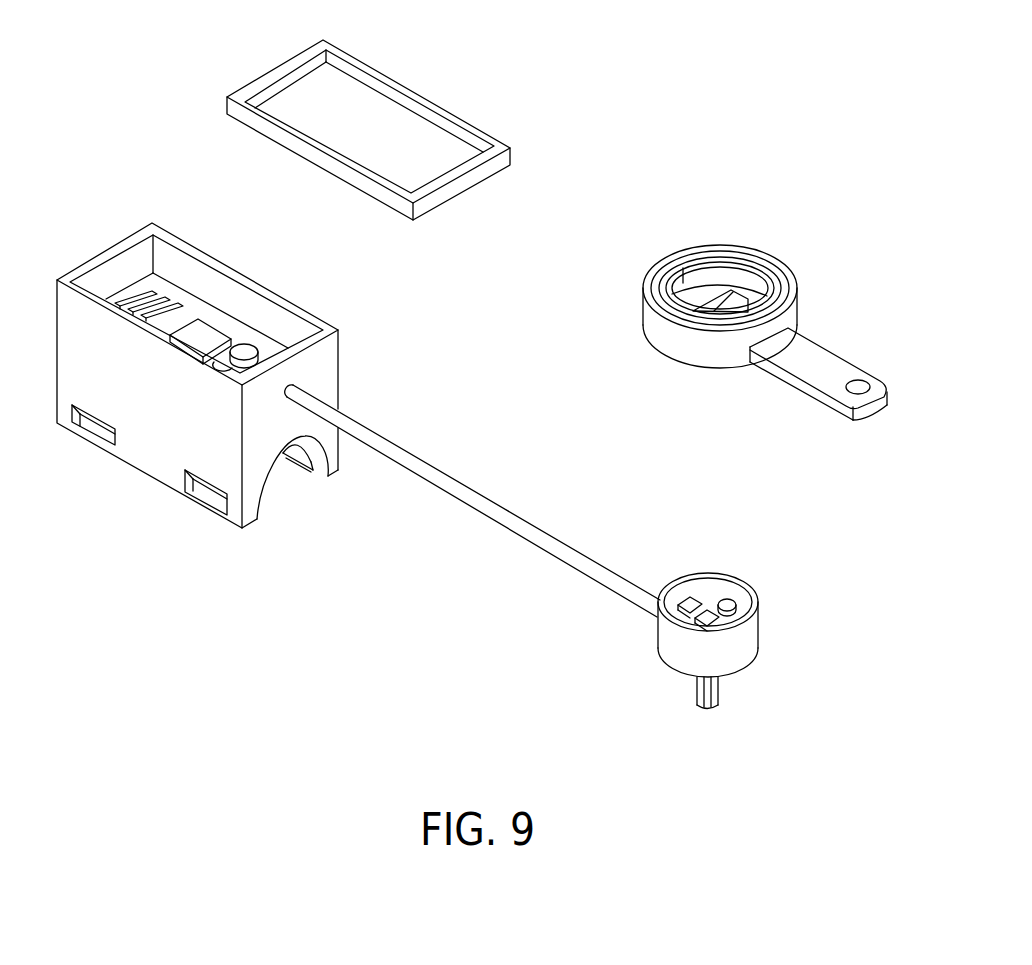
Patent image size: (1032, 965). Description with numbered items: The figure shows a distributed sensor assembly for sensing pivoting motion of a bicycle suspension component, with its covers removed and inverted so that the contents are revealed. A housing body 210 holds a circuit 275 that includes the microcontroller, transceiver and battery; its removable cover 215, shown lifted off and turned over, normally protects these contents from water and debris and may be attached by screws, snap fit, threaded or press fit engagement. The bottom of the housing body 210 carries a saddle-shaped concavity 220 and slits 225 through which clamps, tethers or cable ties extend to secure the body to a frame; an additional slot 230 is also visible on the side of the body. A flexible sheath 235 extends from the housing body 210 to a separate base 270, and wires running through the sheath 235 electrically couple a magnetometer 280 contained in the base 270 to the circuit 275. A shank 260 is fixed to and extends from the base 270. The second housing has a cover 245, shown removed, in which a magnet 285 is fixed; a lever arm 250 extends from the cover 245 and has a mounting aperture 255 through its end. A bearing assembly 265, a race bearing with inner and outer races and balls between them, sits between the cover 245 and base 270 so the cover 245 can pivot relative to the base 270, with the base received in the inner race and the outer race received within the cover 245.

The housing body 210 is at (153, 457).
The removable cover 215 is at (403, 80).
The saddle-shaped concavity 220 is at (280, 478).
The slits 225 is at (80, 435).
The slot 230 is at (203, 493).
The flexible sheath 235 is at (497, 508).
The cover 245 is at (656, 335).
The lever arm 250 is at (817, 358).
The mounting aperture 255 is at (857, 387).
The shank 260 is at (702, 713).
The bearing assembly 265 is at (670, 255).
The base 270 is at (672, 645).
The circuit 275 is at (193, 337).
The magnetometer 280 is at (692, 600).
The magnet 285 is at (720, 290).